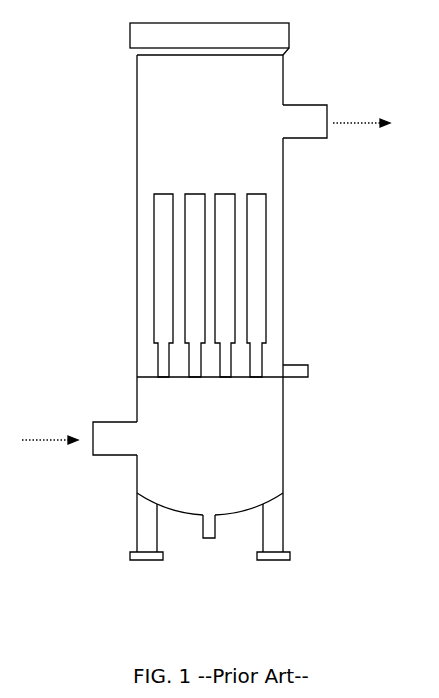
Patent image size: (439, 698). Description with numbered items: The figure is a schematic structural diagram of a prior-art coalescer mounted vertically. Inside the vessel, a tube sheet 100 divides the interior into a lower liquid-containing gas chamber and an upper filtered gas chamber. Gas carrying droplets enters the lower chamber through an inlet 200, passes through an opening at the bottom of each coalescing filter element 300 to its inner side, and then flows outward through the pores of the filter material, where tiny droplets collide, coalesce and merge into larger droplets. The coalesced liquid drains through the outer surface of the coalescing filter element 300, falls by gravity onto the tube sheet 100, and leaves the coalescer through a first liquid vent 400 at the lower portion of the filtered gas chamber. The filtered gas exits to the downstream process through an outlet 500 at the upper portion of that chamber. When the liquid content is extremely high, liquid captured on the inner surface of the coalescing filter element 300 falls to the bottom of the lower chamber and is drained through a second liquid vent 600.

The tube sheet 100 is at (146, 376).
The inlet 200 is at (92, 435).
The coalescing filter element 300 is at (267, 258).
The first liquid vent 400 is at (308, 370).
The outlet 500 is at (330, 112).
The second liquid vent 600 is at (210, 540).